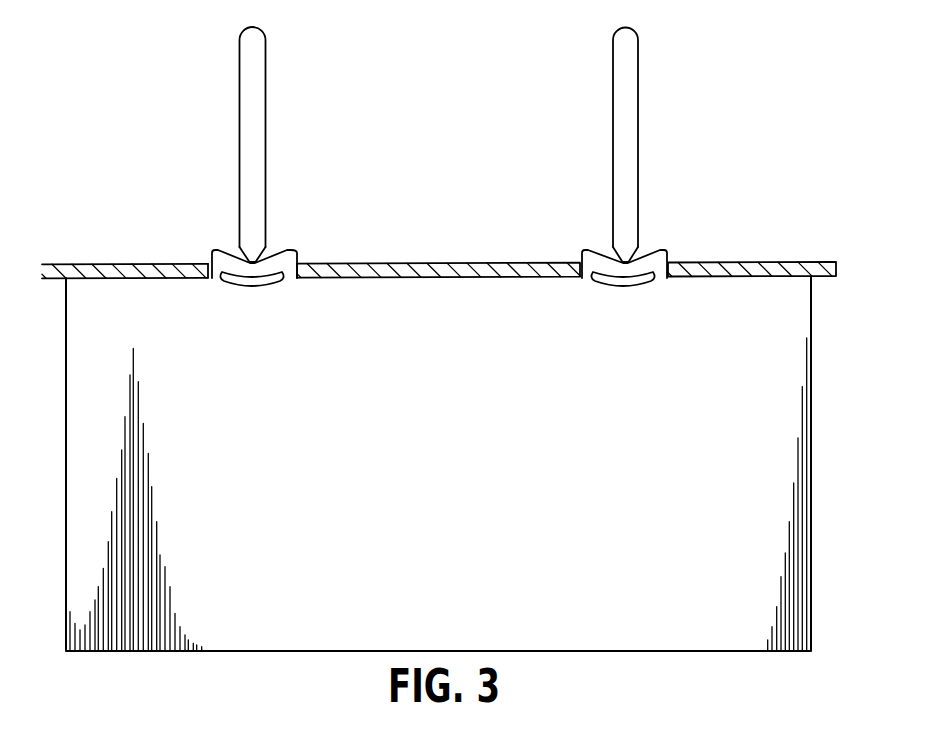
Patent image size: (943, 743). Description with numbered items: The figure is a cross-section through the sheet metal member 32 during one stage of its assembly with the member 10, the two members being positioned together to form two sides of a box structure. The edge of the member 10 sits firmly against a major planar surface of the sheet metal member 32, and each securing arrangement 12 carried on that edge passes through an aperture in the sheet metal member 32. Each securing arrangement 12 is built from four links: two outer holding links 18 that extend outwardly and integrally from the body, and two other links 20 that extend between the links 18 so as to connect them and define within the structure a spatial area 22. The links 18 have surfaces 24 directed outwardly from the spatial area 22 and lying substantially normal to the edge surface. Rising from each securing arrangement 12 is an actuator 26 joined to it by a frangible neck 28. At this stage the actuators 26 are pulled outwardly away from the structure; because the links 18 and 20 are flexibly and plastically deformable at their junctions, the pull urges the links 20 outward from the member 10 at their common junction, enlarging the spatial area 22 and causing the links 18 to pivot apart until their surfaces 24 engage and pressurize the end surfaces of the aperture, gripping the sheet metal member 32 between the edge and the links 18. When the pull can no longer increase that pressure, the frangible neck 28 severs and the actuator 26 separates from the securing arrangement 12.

The member 10 is at (767, 240).
The securing arrangement 12 is at (436, 134).
The outer holding link 18 is at (414, 271).
The other link 20 is at (223, 257).
The spatial area 22 is at (250, 284).
The surface 24 is at (201, 263).
The actuator 26 is at (243, 132).
The frangible neck 28 is at (250, 256).
The sheet metal member 32 is at (458, 260).